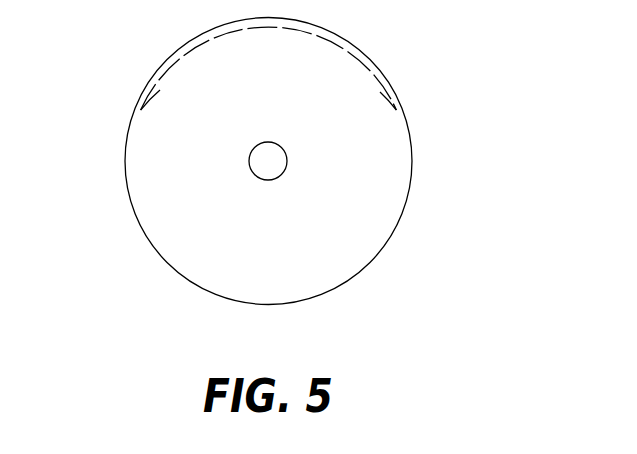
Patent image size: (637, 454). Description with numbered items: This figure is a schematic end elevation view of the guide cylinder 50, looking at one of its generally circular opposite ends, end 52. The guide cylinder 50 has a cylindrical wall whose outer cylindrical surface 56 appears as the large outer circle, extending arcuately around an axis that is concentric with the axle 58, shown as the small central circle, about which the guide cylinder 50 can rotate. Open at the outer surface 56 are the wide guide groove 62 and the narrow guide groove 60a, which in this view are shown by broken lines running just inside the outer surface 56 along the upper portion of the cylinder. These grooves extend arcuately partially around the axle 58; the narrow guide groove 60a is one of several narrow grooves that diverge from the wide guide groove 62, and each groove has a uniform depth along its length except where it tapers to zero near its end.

The guide cylinder 50 is at (393, 277).
The end 52 is at (349, 230).
The outer cylindrical surface 56 is at (412, 168).
The axle 58 is at (260, 172).
The narrow guide groove 60a is at (187, 47).
The wide guide groove 62 is at (387, 82).